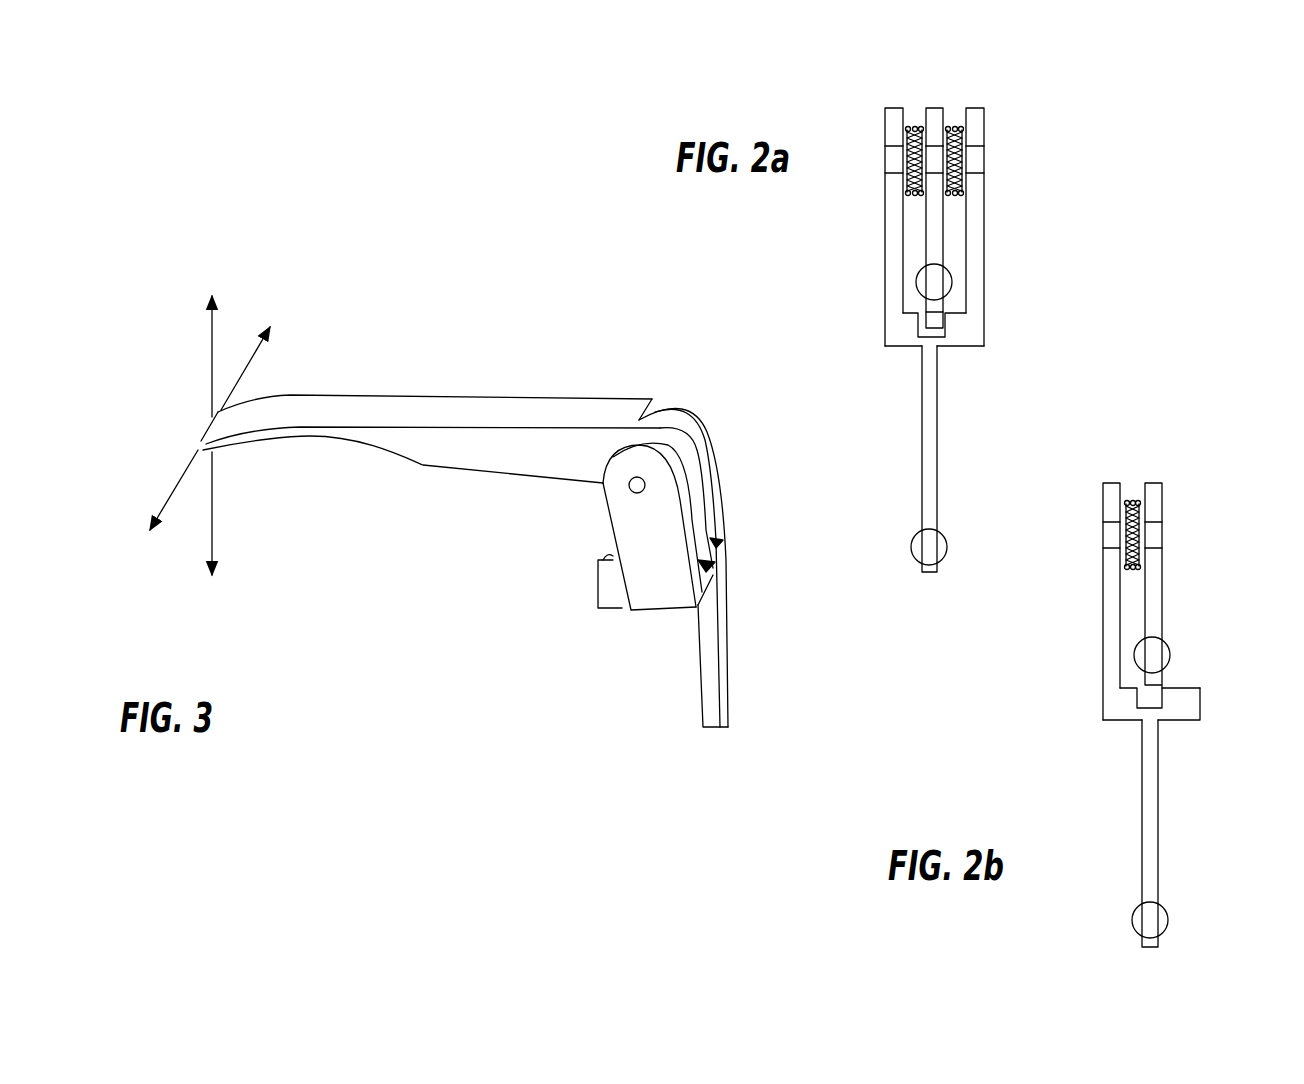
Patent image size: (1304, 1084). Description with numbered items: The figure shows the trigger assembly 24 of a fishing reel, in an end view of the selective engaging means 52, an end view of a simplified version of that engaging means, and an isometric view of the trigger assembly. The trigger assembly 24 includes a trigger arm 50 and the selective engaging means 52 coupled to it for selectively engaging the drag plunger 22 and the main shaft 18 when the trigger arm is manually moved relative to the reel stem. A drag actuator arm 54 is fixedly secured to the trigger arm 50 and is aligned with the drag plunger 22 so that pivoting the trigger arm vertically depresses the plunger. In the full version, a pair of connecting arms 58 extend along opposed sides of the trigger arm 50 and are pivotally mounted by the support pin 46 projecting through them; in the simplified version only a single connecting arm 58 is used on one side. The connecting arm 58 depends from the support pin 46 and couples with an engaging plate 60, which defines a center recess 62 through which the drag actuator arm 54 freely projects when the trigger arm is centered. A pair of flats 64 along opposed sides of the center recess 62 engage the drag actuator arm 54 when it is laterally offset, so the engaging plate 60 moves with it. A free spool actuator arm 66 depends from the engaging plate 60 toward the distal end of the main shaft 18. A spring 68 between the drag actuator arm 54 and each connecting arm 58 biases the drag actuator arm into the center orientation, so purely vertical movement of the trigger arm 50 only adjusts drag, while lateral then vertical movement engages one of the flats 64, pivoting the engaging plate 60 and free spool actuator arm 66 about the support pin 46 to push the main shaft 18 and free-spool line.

In FIG. 2A, the main shaft 18 is at (908, 545).
In FIG. 2B, the main shaft 18 is at (1131, 920).
In FIG. 2A, the drag plunger 22 is at (915, 283).
In FIG. 2B, the drag plunger 22 is at (1133, 654).
In FIG. 3, the trigger assembly 24 is at (479, 386).
In FIG. 3, the support pin 46 is at (633, 491).
In FIG. 3, the trigger arm 50 is at (354, 394).
In FIG. 2A, the trigger arm 50 is at (936, 107).
In FIG. 2A, the selective engaging means 52 is at (870, 232).
In FIG. 2B, the selective engaging means 52 is at (1092, 603).
In FIG. 3, the drag actuator arm 54 is at (698, 510).
In FIG. 2A, the drag actuator arm 54 is at (930, 232).
In FIG. 2B, the drag actuator arm 54 is at (1155, 596).
In FIG. 3, the connecting arm 58 is at (712, 460).
In FIG. 2A, the connecting arm 58 is at (890, 193).
In FIG. 2B, the connecting arm 58 is at (1112, 573).
In FIG. 2A, the engaging plate 60 is at (957, 349).
In FIG. 2B, the engaging plate 60 is at (1177, 722).
In FIG. 2A, the center recess 62 is at (925, 329).
In FIG. 2A, the flats 64 is at (910, 318).
In FIG. 2B, the flats 64 is at (1175, 688).
In FIG. 3, the free spool actuator arm 66 is at (706, 638).
In FIG. 2A, the free spool actuator arm 66 is at (928, 462).
In FIG. 2B, the free spool actuator arm 66 is at (1148, 836).
In FIG. 2A, the spring 68 is at (915, 124).
In FIG. 2B, the spring 68 is at (1133, 503).